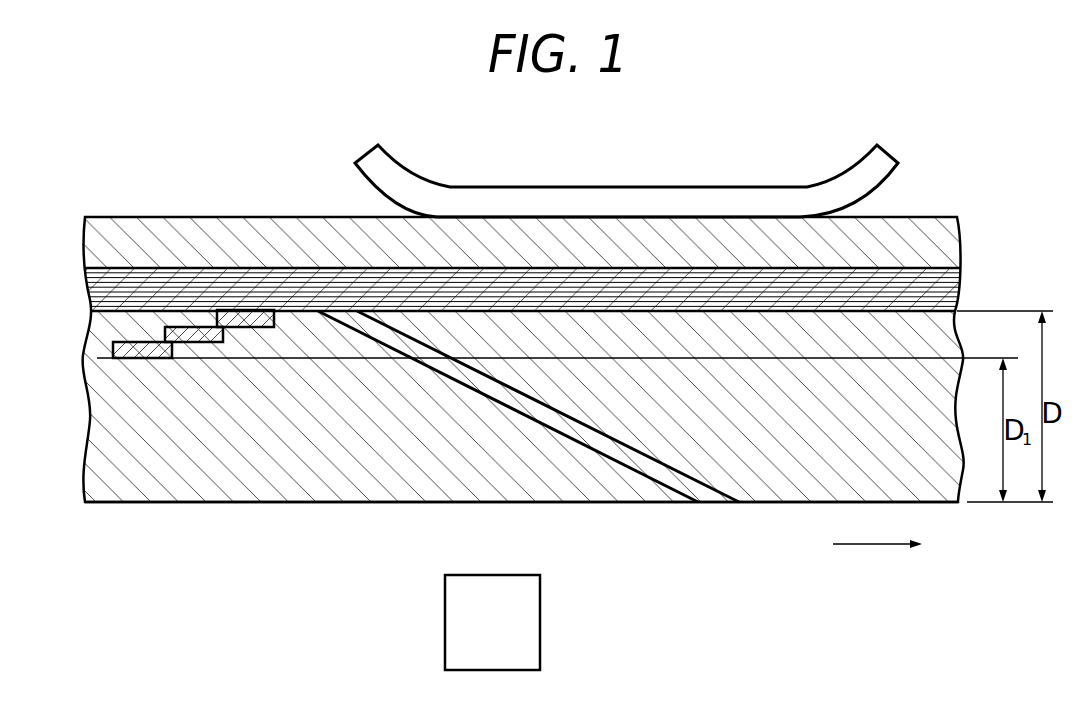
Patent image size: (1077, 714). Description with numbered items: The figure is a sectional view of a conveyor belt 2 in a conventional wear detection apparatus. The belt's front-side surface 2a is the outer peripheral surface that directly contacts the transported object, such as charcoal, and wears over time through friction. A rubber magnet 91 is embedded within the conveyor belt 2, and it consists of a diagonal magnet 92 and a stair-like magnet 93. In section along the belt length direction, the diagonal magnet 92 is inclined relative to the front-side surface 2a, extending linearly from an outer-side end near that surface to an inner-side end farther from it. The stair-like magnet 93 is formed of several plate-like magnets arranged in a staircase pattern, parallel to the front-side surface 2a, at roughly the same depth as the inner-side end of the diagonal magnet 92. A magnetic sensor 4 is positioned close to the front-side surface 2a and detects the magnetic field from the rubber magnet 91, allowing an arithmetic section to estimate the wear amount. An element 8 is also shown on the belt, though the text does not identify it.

The conveyor belt 2 is at (930, 217).
The front-side surface 2a is at (763, 503).
The magnetic sensor 4 is at (508, 635).
The cover layer 8 is at (673, 187).
The rubber magnet 91 is at (426, 458).
The diagonal magnet 92 is at (448, 378).
The stair-like magnet 93 is at (148, 364).